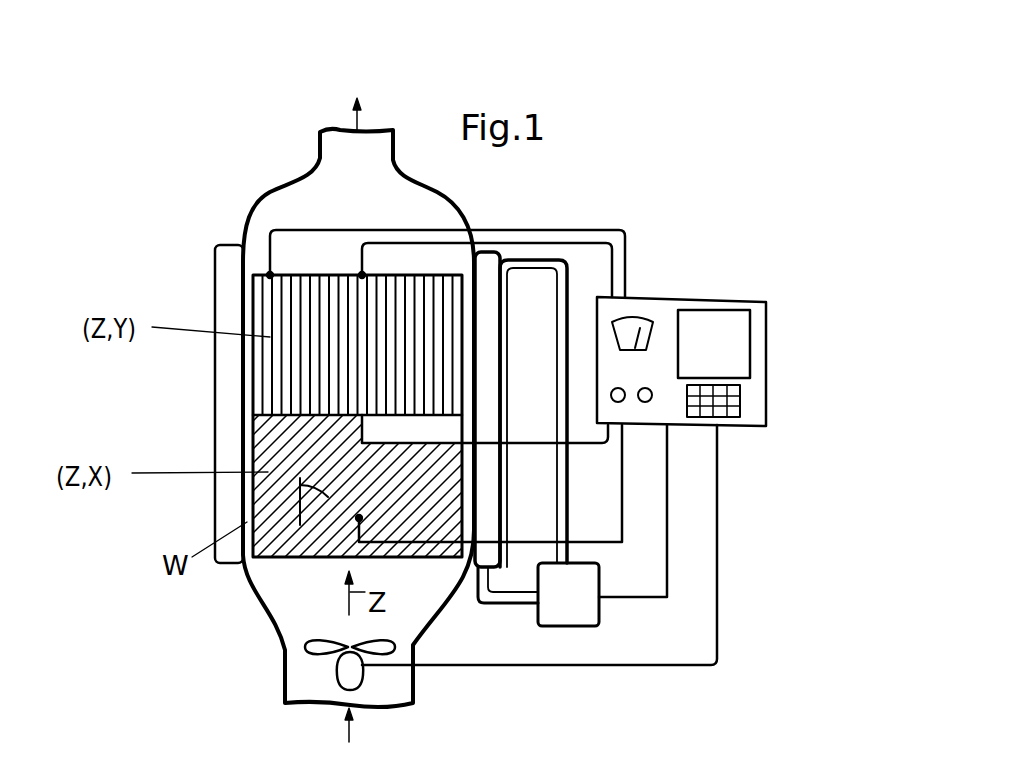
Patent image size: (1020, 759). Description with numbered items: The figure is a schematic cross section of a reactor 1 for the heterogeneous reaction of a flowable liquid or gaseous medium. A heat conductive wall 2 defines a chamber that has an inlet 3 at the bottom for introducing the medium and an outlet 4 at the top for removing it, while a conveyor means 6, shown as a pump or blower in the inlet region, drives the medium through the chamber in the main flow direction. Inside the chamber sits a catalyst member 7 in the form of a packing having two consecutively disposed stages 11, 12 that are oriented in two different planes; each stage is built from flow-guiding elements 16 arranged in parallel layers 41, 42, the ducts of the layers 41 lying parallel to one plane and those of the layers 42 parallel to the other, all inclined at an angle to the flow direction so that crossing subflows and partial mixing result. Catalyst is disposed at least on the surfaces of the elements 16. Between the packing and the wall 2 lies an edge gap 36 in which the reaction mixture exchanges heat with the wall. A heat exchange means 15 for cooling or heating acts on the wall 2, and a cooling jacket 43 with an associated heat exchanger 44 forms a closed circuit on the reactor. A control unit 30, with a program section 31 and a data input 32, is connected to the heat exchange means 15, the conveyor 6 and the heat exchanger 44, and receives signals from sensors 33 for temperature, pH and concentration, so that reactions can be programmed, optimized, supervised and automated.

The reactor 1 is at (143, 623).
The heat conductive wall 2 is at (258, 205).
The inlet 3 is at (320, 704).
The outlet 4 is at (382, 130).
The conveyor means 6 is at (362, 675).
The catalyst member 7 is at (255, 272).
The stage 11 is at (273, 497).
The stage 12 is at (280, 362).
The heat exchange means 15 is at (536, 407).
The flow-guiding elements 16 is at (297, 455).
The control unit 30 is at (767, 305).
The program section 31 is at (738, 348).
The data input 32 is at (730, 402).
The sensors 33 is at (359, 520).
The edge gap 36 is at (275, 518).
The layers 41 is at (420, 497).
The layers 42 is at (428, 350).
The cooling jacket 43 is at (490, 483).
The heat exchanger 44 is at (585, 612).